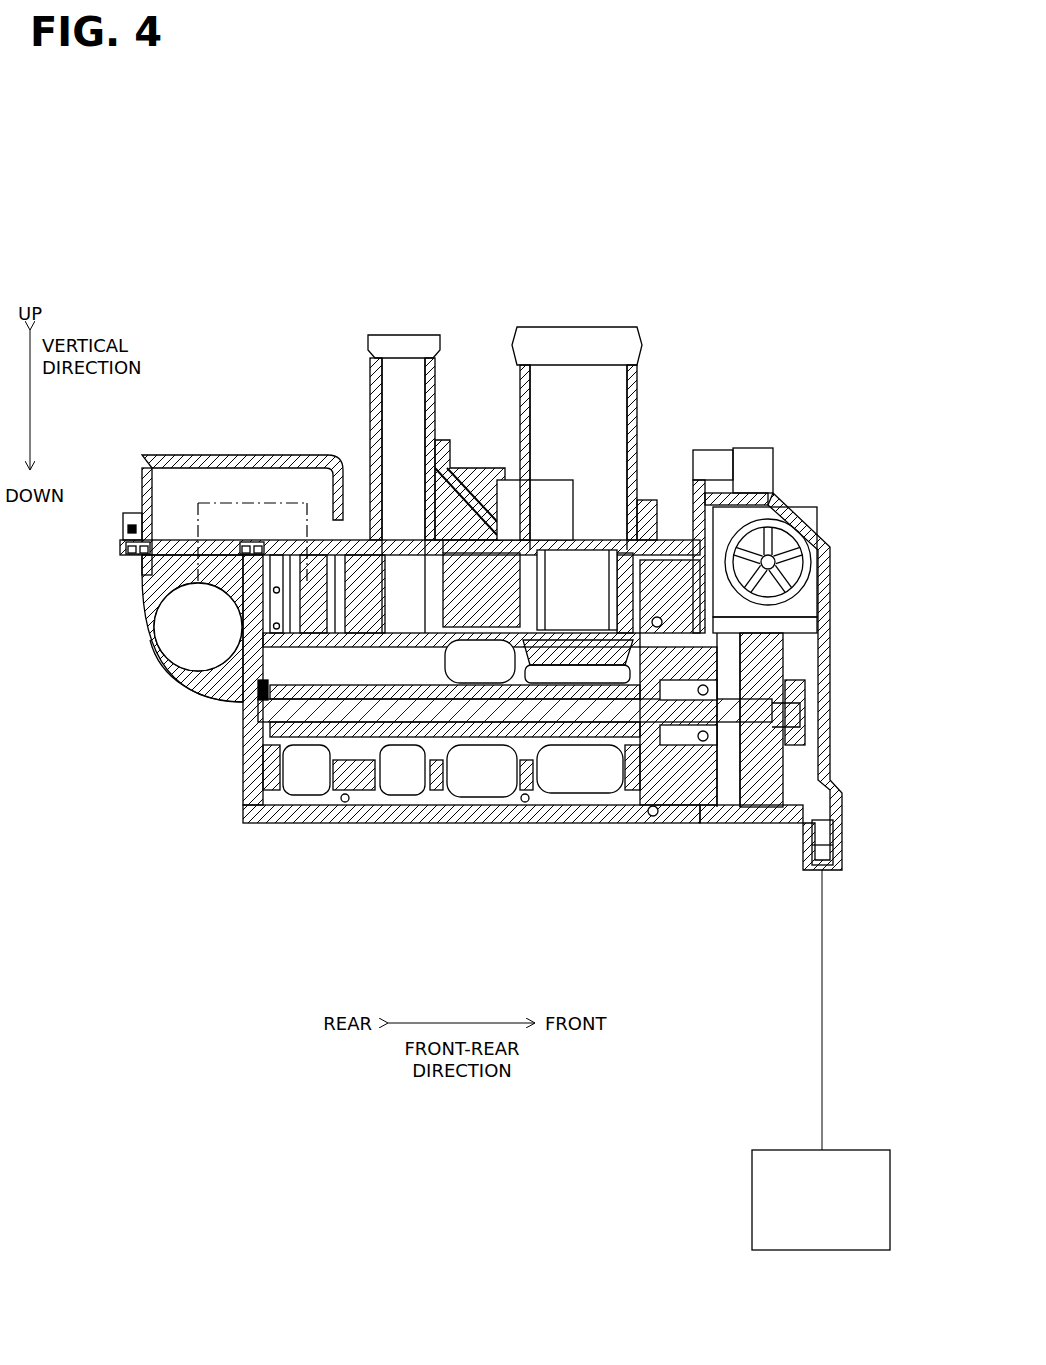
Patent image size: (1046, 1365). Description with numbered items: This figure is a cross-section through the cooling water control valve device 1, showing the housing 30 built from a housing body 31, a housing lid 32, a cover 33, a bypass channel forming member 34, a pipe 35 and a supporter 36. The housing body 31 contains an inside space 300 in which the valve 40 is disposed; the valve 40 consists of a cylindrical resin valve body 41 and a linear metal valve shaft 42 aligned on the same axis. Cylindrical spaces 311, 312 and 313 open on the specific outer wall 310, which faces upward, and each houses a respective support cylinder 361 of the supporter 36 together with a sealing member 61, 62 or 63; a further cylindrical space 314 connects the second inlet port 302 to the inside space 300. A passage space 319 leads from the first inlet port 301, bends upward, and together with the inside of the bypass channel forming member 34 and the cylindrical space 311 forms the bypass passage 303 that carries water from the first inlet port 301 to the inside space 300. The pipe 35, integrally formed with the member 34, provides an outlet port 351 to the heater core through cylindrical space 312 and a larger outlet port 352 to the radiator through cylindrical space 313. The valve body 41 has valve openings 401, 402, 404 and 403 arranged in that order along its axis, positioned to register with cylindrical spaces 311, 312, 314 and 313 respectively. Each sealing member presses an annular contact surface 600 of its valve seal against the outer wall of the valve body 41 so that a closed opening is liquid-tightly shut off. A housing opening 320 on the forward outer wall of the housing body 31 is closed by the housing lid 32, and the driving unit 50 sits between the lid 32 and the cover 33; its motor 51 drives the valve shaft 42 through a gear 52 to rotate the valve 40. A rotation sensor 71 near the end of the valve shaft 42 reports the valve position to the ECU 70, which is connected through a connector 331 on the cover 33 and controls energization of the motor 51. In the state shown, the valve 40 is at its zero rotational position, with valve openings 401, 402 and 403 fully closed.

The cooling water control valve device 1 is at (722, 226).
The housing 30 is at (146, 455).
The housing body 31 is at (255, 818).
The housing lid 32 is at (680, 822).
The cover 33 is at (830, 612).
The bypass channel forming member 34 is at (218, 462).
The pipe 35 is at (517, 330).
The supporter 36 is at (502, 486).
The valve 40 is at (610, 808).
The valve body 41 is at (338, 805).
The valve shaft 42 is at (652, 818).
The driving unit 50 is at (795, 650).
The motor 51 is at (812, 572).
The gear 52 is at (790, 672).
The sealing member 61 is at (330, 585).
The sealing member 62 is at (408, 580).
The sealing member 63 is at (585, 580).
The electronic control unit 70 is at (790, 1165).
The rotation sensor 71 is at (822, 710).
The inside space 300 is at (508, 808).
The first inlet port 301 is at (168, 668).
The second inlet port 302 is at (433, 808).
The bypass passage 303 is at (190, 573).
The specific outer wall 310 is at (450, 575).
The cylindrical space 311 is at (285, 600).
The cylindrical space 312 is at (362, 560).
The cylindrical space 313 is at (546, 565).
The cylindrical space 314 is at (482, 808).
The passage space 319 is at (158, 605).
The housing opening 320 is at (735, 822).
The connector 331 is at (845, 858).
The outlet port 351 is at (407, 335).
The outlet port 352 is at (583, 327).
The support cylinder 361 is at (652, 560).
The valve opening 401 is at (305, 812).
The valve opening 402 is at (392, 805).
The valve opening 403 is at (565, 808).
The valve opening 404 is at (455, 805).
The contact surface 600 is at (250, 692).